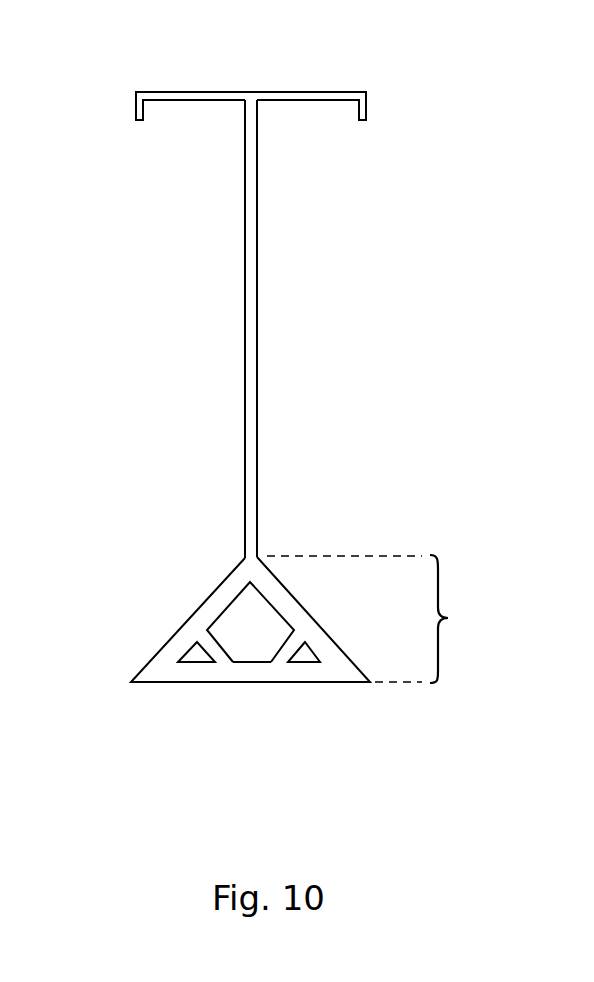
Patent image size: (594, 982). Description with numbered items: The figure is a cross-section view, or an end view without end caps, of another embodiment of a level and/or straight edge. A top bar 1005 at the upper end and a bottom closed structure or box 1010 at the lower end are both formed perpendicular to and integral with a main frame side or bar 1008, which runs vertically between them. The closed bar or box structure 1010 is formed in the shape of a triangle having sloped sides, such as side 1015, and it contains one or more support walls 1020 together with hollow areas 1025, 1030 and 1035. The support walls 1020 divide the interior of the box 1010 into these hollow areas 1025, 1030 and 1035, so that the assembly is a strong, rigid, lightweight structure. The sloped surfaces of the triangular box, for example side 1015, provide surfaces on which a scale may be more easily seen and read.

The top bar 1005 is at (282, 92).
The main frame side or bar 1008 is at (252, 260).
The bottom closed structure or box 1010 is at (389, 619).
The side 1015 is at (180, 640).
The support wall 1020 is at (217, 653).
The hollow area 1025 is at (308, 655).
The hollow area 1030 is at (247, 607).
The hollow area 1035 is at (185, 662).